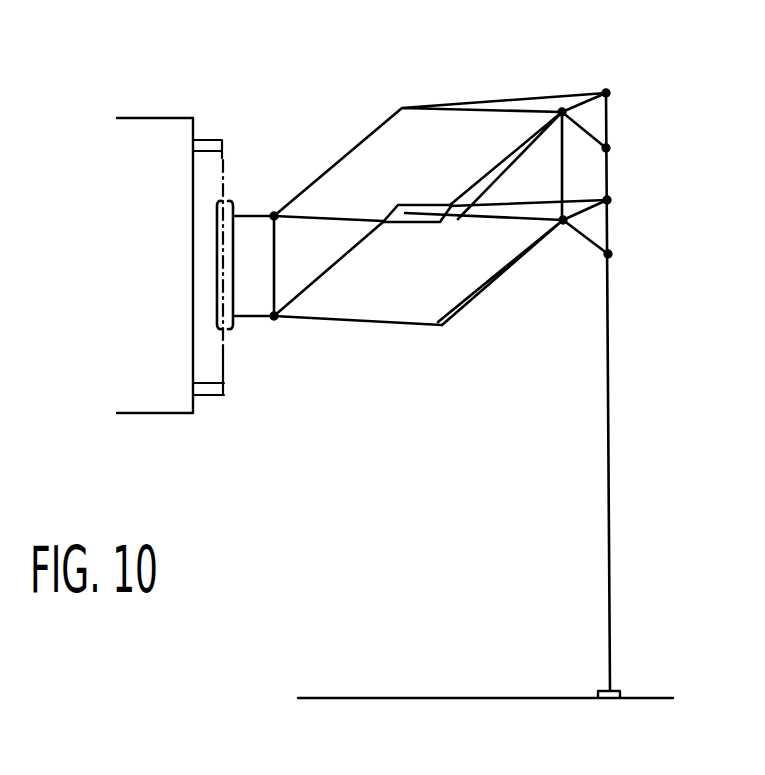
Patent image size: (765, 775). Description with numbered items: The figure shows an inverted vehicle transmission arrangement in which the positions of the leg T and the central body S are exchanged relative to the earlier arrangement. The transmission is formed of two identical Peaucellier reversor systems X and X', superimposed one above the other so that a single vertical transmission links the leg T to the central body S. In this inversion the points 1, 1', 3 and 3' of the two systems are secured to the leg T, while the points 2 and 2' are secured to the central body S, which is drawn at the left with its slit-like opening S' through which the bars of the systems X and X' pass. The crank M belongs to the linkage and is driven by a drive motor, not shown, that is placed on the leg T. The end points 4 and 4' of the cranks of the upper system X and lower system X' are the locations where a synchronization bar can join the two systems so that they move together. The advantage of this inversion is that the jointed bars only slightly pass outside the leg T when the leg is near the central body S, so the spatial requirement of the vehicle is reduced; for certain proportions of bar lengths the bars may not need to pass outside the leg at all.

The central body S is at (155, 225).
The slit aperture S' is at (203, 228).
The point 2 is at (309, 227).
The point 2' is at (338, 307).
The Peaucellier system x is at (440, 123).
The Peaucellier system x' is at (467, 309).
The end point of crank 4 is at (571, 131).
The end point of crank 4' is at (564, 260).
The point 1 is at (628, 76).
The point 1' is at (638, 224).
The point 3 is at (630, 197).
The point 3' is at (632, 272).
The crank M is at (610, 118).
The leg T is at (610, 467).